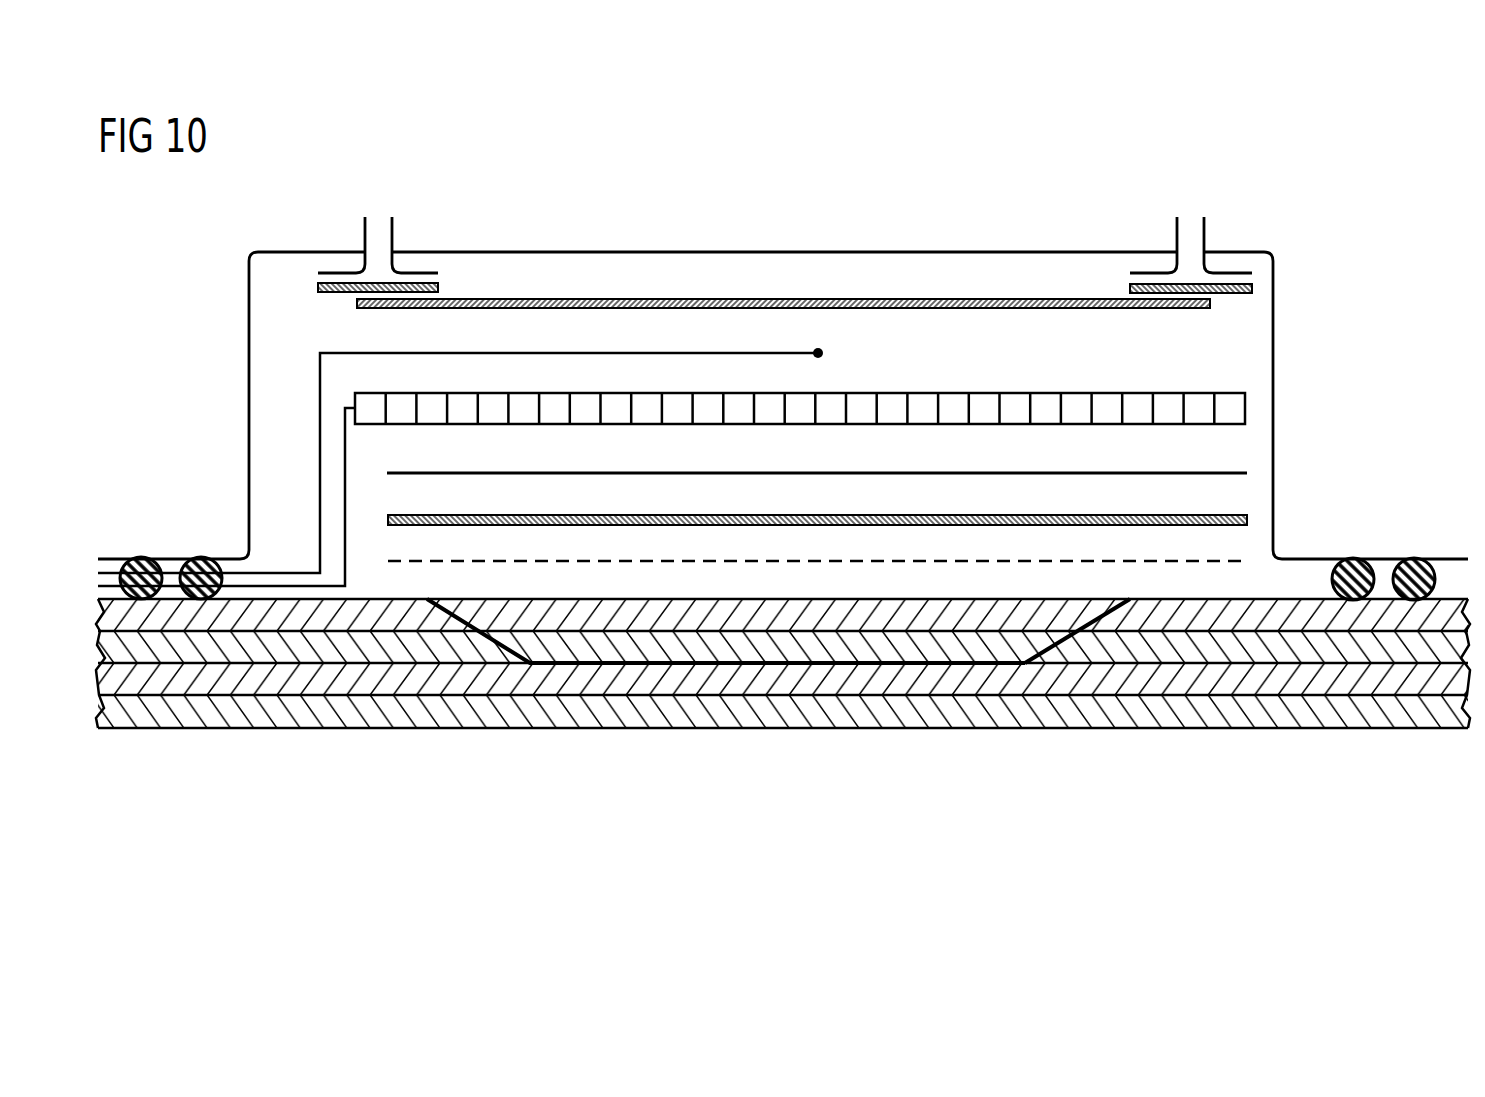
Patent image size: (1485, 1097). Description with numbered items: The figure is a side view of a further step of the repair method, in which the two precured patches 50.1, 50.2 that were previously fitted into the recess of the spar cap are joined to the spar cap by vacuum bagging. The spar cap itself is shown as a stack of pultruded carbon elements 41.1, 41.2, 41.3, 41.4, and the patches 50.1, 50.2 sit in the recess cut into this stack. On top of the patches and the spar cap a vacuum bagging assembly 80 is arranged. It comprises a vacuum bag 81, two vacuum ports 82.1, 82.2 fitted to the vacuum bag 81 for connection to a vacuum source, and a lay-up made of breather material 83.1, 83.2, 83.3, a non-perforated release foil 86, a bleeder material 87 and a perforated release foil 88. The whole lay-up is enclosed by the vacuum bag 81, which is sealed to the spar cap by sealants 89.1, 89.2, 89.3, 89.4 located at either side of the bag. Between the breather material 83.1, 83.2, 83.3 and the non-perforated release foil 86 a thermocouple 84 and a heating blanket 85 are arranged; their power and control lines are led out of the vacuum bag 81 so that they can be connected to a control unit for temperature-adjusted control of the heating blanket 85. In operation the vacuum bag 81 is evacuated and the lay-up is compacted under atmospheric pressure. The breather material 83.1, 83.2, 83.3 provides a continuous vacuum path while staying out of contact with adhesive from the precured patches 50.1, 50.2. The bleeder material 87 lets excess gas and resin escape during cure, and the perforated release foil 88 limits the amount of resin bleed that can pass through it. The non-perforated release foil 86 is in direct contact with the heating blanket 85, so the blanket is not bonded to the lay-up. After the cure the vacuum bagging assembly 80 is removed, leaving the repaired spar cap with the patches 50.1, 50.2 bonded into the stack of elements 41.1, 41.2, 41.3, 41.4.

The vacuum bagging assembly 80 is at (664, 184).
The vacuum bag 81 is at (1243, 249).
The vacuum port 82.1 is at (393, 233).
The vacuum port 82.2 is at (1176, 232).
The breather material 83.1 is at (330, 293).
The breather material 83.2 is at (1245, 294).
The breather material 83.3 is at (1015, 310).
The thermocouple 84 is at (823, 353).
The heating blanket 85 is at (1247, 409).
The non-perforated release foil 86 is at (1237, 471).
The bleeder material 87 is at (1017, 514).
The perforated release foil 88 is at (1002, 563).
The sealant 89.1 is at (137, 557).
The sealant 89.2 is at (199, 557).
The sealant 89.3 is at (1355, 558).
The sealant 89.4 is at (1415, 558).
The pultruded carbon element 41.1 is at (173, 623).
The pultruded carbon element 41.2 is at (257, 652).
The pultruded carbon element 41.3 is at (337, 682).
The pultruded carbon element 41.4 is at (420, 715).
The patch 50.1 is at (873, 617).
The patch 50.2 is at (737, 648).